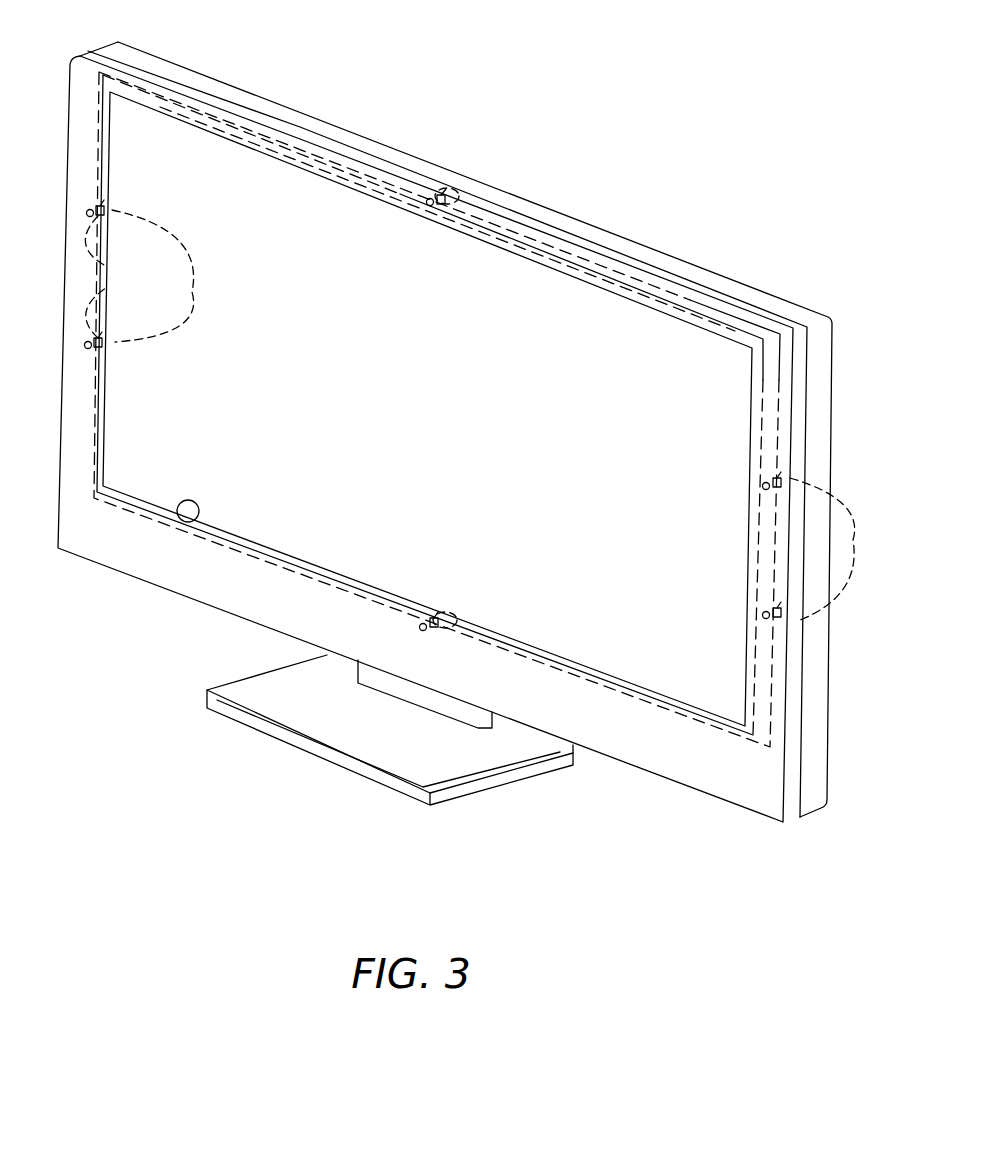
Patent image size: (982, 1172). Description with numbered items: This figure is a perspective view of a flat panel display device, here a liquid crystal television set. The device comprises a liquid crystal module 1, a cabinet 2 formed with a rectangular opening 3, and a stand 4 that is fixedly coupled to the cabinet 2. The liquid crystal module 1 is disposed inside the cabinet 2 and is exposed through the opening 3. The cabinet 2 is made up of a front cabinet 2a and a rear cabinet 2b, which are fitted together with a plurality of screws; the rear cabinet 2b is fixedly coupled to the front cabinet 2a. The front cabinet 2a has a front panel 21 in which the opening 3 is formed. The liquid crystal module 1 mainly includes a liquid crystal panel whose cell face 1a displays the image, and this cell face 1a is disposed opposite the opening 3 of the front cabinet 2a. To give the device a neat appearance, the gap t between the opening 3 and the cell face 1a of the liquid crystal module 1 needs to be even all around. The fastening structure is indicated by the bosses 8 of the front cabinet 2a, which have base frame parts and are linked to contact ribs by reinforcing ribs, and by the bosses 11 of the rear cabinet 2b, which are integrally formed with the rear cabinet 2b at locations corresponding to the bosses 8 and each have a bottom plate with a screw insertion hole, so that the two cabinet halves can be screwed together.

The liquid crystal module 1 is at (623, 700).
The cell face 1a is at (398, 426).
The cabinet 2 is at (812, 876).
The front cabinet 2a is at (703, 760).
The rear cabinet 2b is at (814, 812).
The opening 3 is at (577, 657).
The stand 4 is at (350, 742).
The boss 8 is at (428, 209).
The boss 11 is at (455, 192).
The front panel 21 is at (652, 752).
The gap t is at (187, 522).